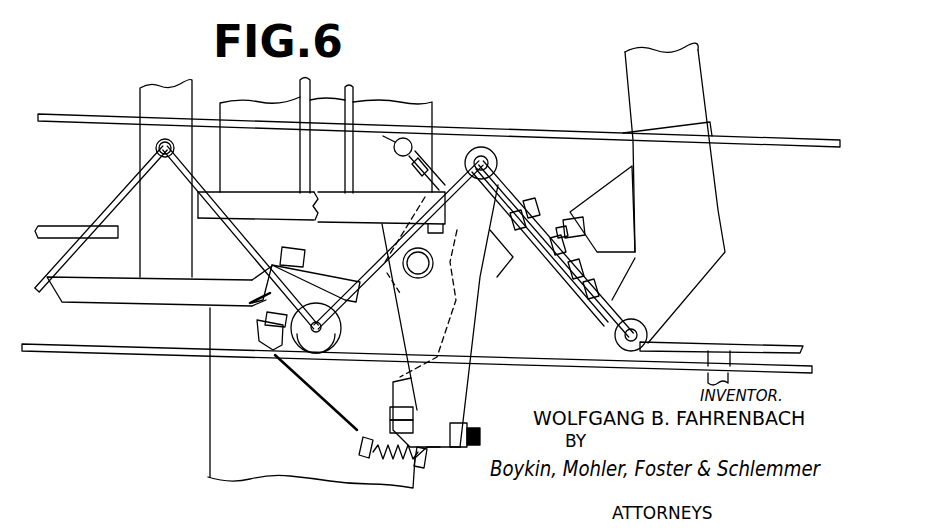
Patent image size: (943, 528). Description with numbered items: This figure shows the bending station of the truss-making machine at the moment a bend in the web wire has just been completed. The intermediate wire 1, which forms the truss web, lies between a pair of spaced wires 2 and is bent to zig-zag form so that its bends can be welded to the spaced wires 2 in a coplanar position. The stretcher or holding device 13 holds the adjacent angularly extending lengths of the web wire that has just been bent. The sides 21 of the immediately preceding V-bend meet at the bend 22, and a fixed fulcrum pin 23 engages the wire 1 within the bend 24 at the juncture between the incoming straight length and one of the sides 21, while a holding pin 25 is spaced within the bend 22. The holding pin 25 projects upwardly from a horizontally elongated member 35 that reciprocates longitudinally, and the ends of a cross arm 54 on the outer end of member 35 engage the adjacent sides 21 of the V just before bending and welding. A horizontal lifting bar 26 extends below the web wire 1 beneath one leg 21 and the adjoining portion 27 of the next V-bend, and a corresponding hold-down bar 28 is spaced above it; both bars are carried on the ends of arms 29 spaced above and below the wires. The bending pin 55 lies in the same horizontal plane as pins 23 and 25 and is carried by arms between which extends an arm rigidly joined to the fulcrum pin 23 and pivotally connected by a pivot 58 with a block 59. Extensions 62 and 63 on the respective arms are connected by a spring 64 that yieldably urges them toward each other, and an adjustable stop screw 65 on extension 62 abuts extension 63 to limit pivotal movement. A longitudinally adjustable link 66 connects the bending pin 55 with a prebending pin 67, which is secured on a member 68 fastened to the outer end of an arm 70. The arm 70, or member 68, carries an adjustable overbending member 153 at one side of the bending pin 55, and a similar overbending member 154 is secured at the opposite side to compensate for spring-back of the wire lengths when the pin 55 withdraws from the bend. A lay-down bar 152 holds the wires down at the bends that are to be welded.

The wire 1 is at (749, 343).
The spaced wires 2 is at (546, 357).
The stretcher or holding device 13 is at (136, 323).
The sides of the preceding V-bend 21 is at (200, 187).
The bend 22 is at (167, 140).
The fulcrum pin 23 is at (318, 322).
The bend 24 is at (318, 348).
The holding pin 25 is at (165, 158).
The lifting bar 26 is at (263, 205).
The adjoining portion 27 is at (396, 296).
The hold-down bar 28 is at (377, 206).
The arms 29 is at (312, 80).
The horizontally elongated member 35 is at (138, 130).
The cross arm 54 is at (97, 298).
The bending pin 55 is at (483, 158).
The pivot 58 is at (424, 268).
The block 59 is at (452, 252).
The extension 62 is at (440, 427).
The extension 63 is at (372, 422).
The spring 64 is at (392, 463).
The adjustable stop screw 65 is at (457, 452).
The longitudinally adjustable link 66 is at (567, 272).
The prebending pin 67 is at (633, 330).
The member 68 is at (710, 195).
The arm 70 is at (706, 121).
The lay-down bar 152 is at (61, 231).
The overbending member 153 is at (562, 226).
The overbending member 154 is at (438, 143).